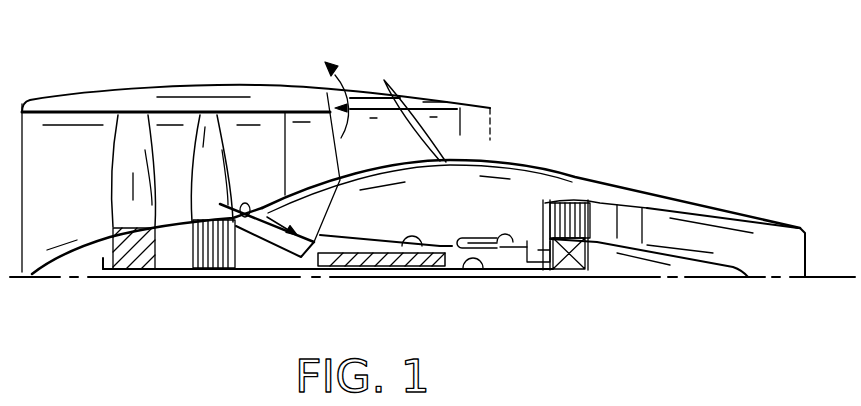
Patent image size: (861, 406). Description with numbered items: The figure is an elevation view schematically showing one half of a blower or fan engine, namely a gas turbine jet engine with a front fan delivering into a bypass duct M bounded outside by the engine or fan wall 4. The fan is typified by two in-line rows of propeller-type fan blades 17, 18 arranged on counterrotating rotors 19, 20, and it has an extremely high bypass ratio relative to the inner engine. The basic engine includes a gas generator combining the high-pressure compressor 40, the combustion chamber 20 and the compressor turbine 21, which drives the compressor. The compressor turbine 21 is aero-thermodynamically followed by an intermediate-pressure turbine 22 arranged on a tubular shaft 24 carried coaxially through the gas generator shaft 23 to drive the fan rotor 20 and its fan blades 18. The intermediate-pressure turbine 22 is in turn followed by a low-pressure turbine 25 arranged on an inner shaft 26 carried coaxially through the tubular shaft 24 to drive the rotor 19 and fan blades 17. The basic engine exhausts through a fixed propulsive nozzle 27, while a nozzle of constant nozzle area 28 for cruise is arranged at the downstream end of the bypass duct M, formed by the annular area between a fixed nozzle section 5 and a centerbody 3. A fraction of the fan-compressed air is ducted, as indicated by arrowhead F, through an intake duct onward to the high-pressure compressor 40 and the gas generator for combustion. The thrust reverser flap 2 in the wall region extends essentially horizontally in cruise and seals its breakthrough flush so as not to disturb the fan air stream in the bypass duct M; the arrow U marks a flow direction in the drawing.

The thrust reverser flap 2 is at (419, 102).
The centerbody 3 is at (497, 163).
The engine or fan wall 4 is at (300, 72).
The fixed nozzle section 5 is at (474, 106).
The fan blades 17 is at (127, 128).
The fan blades 18 is at (208, 128).
The rotor 19 is at (105, 259).
The rotor 20 is at (215, 245).
The compressor turbine 21 is at (506, 249).
The intermediate-pressure turbine 22 is at (556, 208).
The gas generator shaft 23 is at (474, 269).
The tubular shaft 24 is at (548, 272).
The low-pressure turbine 25 is at (598, 248).
The inner shaft 26 is at (168, 268).
The fixed propulsive nozzle 27 is at (805, 213).
The nozzle of constant nozzle area 28 is at (500, 100).
The high-pressure compressor 40 is at (427, 254).
The upward flow U is at (366, 100).
The bypass duct M is at (270, 168).
The arrowhead F is at (243, 217).